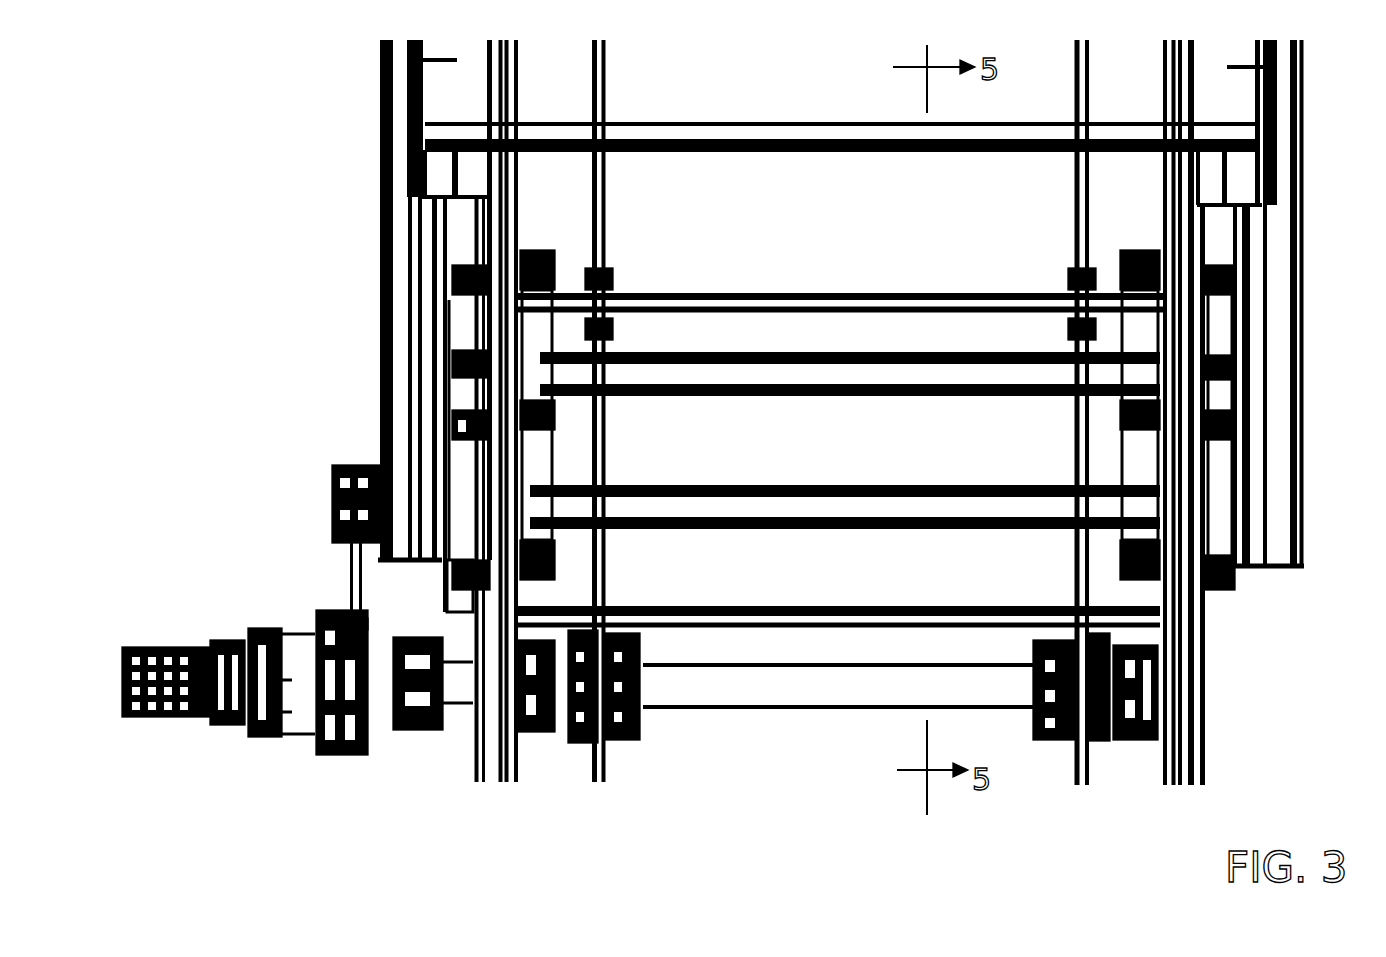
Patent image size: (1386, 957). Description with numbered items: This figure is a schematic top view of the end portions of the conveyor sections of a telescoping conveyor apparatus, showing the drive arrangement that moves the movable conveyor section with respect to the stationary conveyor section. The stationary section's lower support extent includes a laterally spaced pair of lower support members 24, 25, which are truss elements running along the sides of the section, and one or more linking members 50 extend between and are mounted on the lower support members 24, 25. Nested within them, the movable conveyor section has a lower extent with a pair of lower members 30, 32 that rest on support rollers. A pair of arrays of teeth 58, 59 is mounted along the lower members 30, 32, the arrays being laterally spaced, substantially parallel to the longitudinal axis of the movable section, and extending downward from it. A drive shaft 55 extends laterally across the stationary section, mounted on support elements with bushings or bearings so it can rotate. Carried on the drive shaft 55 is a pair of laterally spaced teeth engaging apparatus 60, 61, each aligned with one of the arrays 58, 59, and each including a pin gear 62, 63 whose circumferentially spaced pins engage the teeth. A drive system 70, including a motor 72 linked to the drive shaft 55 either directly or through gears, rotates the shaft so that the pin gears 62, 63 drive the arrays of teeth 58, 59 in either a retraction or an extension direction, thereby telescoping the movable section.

The lower support member 24 is at (382, 240).
The lower support member 25 is at (1298, 297).
The lower member 30 is at (493, 352).
The lower member 32 is at (1193, 370).
The linking member 50 is at (767, 530).
The drive shaft 55 is at (700, 710).
The array of teeth 58 is at (610, 197).
The array of teeth 59 is at (1083, 210).
The teeth engaging apparatus 60 is at (566, 758).
The teeth engaging apparatus 61 is at (1116, 747).
The pin gear 62 is at (620, 745).
The pin gear 63 is at (1060, 747).
The drive system 70 is at (340, 788).
The motor 72 is at (258, 632).